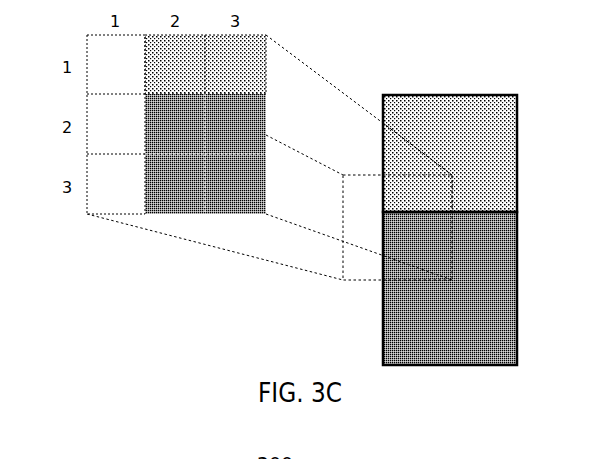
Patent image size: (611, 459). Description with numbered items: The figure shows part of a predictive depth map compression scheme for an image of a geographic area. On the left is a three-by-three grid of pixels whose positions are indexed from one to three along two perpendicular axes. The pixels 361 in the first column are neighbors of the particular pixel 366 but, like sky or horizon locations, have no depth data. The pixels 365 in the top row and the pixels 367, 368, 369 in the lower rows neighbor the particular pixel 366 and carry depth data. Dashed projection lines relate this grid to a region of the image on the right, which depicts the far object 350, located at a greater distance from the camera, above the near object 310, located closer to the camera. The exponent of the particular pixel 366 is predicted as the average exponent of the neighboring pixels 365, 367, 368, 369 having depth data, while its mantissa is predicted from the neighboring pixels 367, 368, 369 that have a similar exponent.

The pixels 361 is at (116, 124).
The pixels 365 is at (205, 64).
The particular pixel 366 is at (175, 124).
The pixel 367 is at (235, 124).
The pixel 368 is at (175, 184).
The pixel 369 is at (235, 184).
The object 350 is at (517, 195).
The object 310 is at (517, 260).